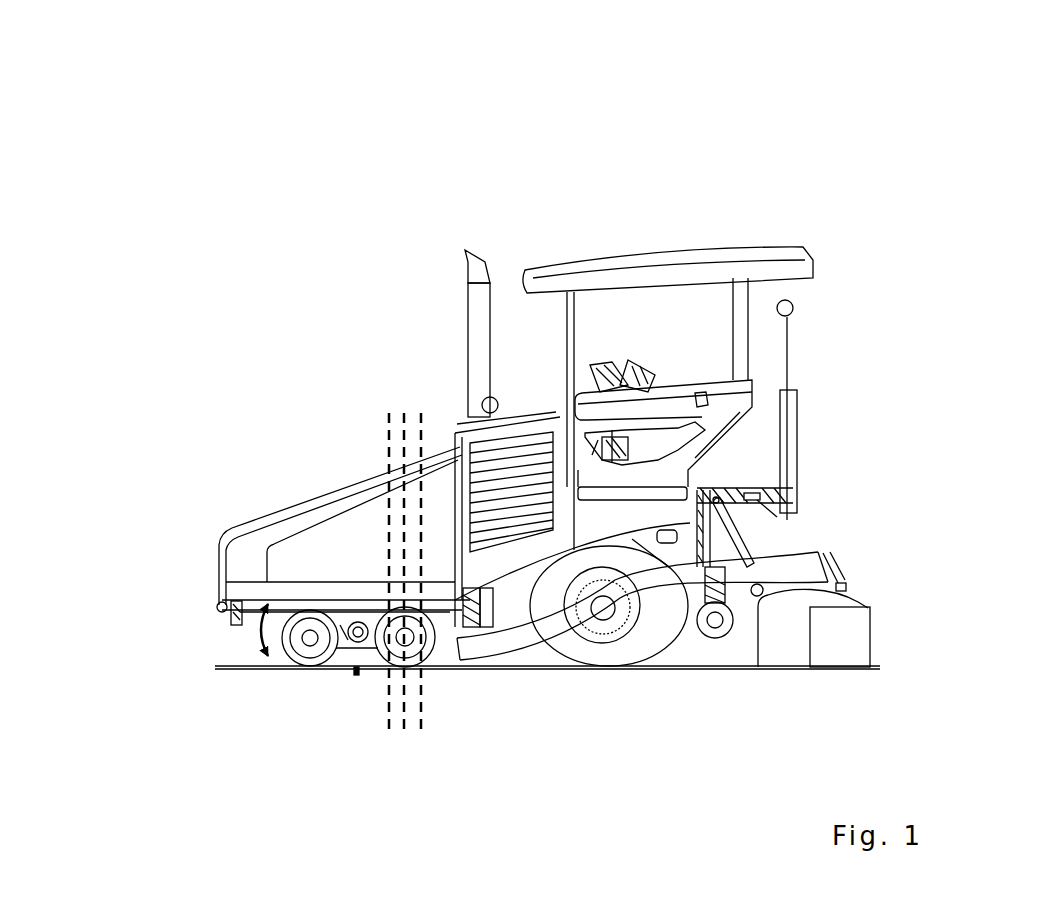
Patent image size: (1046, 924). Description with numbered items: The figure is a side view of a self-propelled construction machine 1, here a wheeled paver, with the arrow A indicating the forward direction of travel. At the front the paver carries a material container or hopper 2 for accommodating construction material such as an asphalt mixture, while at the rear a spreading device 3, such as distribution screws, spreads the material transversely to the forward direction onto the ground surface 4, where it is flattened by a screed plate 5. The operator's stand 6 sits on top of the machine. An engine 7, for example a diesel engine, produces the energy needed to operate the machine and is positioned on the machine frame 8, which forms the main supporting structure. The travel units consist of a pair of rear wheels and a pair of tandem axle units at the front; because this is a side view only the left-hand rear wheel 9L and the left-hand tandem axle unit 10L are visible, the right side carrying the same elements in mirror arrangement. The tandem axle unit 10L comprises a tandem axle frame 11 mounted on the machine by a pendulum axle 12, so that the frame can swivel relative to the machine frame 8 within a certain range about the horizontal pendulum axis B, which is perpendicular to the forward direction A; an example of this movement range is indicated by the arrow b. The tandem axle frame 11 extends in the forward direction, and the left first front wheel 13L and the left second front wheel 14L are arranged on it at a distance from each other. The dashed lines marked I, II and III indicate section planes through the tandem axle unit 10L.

The construction machine 1 is at (676, 171).
The hopper 2 is at (327, 512).
The spreading device 3 is at (717, 635).
The ground surface 4 is at (230, 665).
The screed plate 5 is at (860, 622).
The operator's stand 6 is at (620, 322).
The engine 7 is at (522, 488).
The machine frame 8 is at (510, 612).
The left-hand rear wheel 9L is at (607, 653).
The left-hand tandem axle unit 10L is at (363, 647).
The tandem axle frame 11 is at (342, 627).
The pendulum axle 12 is at (352, 620).
The pendulum axis B is at (296, 546).
The left first front wheel 13L is at (300, 648).
The left second front wheel 14L is at (410, 652).
The forward direction of travel A is at (210, 576).
The movement range arrow b is at (258, 635).
The section plane I is at (404, 413).
The section plane II is at (421, 413).
The section plane III is at (389, 413).